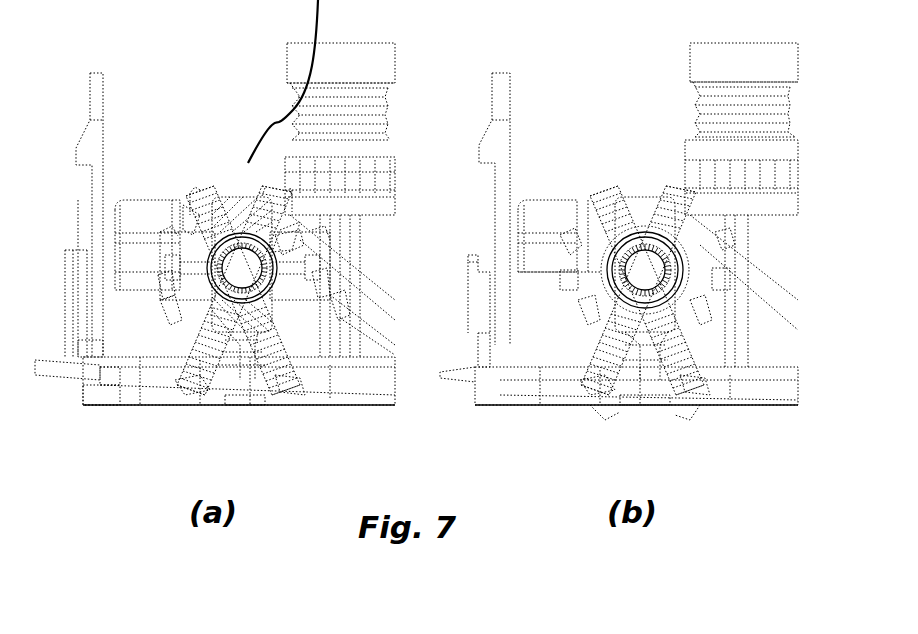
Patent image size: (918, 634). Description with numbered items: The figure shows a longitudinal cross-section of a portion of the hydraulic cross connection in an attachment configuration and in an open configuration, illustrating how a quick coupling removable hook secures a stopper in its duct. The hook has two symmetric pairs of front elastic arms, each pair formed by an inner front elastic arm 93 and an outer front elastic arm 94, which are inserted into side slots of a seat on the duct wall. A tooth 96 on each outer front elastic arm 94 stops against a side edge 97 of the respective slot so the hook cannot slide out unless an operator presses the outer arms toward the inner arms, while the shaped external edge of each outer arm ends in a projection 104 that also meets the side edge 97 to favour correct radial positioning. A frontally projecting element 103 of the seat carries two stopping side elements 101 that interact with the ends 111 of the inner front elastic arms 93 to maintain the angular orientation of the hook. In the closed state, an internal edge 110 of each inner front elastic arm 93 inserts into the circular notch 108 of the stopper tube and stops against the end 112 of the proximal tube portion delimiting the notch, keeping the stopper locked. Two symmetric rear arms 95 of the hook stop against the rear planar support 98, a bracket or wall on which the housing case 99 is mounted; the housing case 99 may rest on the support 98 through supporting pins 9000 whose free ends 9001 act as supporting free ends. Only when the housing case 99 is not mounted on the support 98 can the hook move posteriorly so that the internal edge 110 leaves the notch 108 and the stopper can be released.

The inner front elastic arm 93 is at (193, 222).
The outer front elastic arm 94 is at (163, 307).
The rear arm 95 is at (197, 382).
The tooth 96 is at (160, 240).
The side edge 97 is at (160, 277).
The rear planar support 98 is at (242, 400).
The housing case 99 is at (83, 353).
The stopping side element 101 is at (217, 200).
The frontally projecting element 103 is at (242, 240).
The projection 104 is at (163, 266).
The circular notch 108 is at (645, 240).
The internal edge 110 is at (267, 302).
The end of inner front elastic arm 111 is at (200, 192).
The end of proximal tube portion 112 is at (267, 250).
The supporting pin 9000 is at (108, 375).
The free end of supporting pin 9001 is at (110, 395).